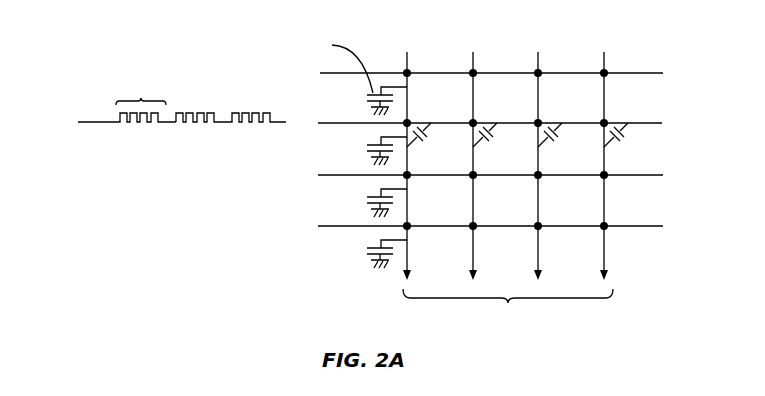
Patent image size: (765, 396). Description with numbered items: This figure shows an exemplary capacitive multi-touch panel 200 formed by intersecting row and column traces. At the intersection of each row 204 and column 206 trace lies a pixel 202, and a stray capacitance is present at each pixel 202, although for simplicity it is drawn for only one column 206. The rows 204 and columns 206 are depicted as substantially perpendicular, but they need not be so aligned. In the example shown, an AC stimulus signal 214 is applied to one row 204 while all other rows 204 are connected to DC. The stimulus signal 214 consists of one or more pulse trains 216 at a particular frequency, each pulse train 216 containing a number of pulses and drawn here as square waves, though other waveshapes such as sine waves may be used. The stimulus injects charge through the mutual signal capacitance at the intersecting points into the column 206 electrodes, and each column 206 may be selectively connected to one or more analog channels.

The capacitive multi-touch panel 200 is at (571, 31).
The pixel 202 is at (606, 72).
The row 204 is at (646, 122).
The column 206 is at (606, 226).
The Vstim signal 214 is at (102, 124).
The pulse train 216 is at (141, 99).